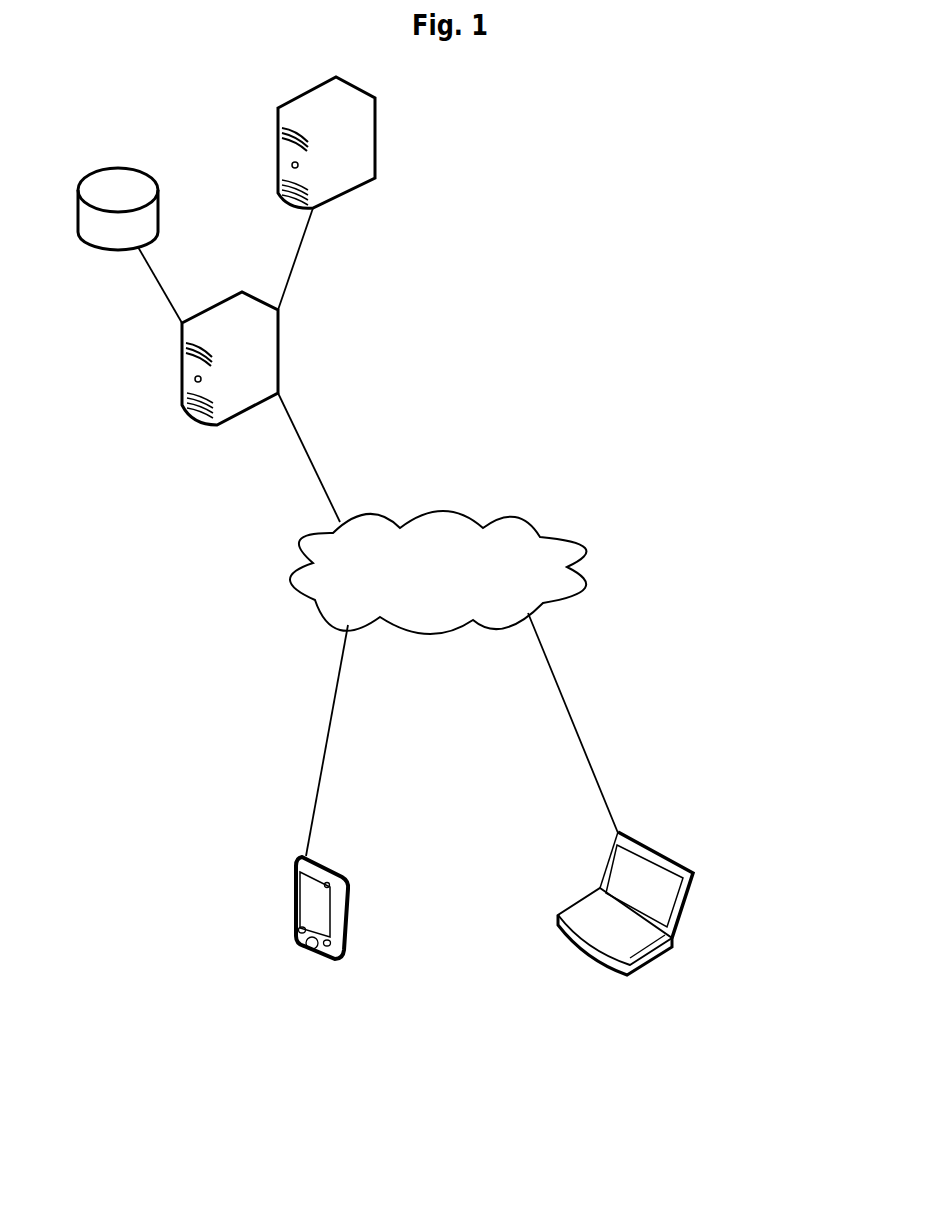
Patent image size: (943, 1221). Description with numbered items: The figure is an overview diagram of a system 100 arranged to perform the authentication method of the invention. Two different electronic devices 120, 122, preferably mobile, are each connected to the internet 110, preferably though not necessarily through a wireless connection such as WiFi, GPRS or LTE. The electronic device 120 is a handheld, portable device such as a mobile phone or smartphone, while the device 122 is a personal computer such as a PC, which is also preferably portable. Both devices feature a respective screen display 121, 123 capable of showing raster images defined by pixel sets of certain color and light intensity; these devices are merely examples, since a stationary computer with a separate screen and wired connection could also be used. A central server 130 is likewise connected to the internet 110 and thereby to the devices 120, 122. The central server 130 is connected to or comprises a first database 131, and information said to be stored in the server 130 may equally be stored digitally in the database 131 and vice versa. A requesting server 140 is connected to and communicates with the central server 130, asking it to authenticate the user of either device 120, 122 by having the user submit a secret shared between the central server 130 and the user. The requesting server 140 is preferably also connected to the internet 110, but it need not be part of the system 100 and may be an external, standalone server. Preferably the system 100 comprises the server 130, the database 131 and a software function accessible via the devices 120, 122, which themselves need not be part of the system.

The system 100 is at (592, 348).
The internet 110 is at (438, 572).
The electronic device 120 is at (249, 945).
The screen display 121 is at (300, 898).
The electronic device 122 is at (652, 944).
The screen display 123 is at (683, 898).
The central server 130 is at (230, 358).
The first database 131 is at (118, 209).
The requesting server 140 is at (326, 142).